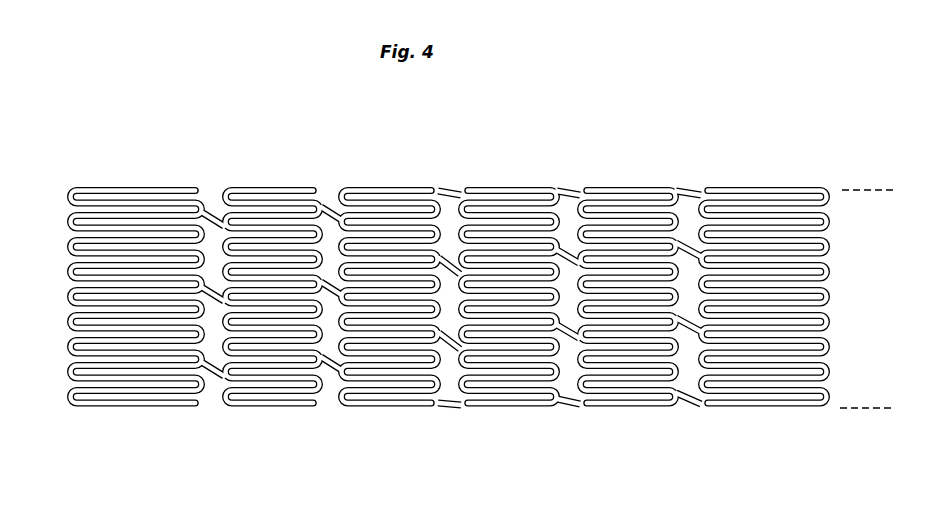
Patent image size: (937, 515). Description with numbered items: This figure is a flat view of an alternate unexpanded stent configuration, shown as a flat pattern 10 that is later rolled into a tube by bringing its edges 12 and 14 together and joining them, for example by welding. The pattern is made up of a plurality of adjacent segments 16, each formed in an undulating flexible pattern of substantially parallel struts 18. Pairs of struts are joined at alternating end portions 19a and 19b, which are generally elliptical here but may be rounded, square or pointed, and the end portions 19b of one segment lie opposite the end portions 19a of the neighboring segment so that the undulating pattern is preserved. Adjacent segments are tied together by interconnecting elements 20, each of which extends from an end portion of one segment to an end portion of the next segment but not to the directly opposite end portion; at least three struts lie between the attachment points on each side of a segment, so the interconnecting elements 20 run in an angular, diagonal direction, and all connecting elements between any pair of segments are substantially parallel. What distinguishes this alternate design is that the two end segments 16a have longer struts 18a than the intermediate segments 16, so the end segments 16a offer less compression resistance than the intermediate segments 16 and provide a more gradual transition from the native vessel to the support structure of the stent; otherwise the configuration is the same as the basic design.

The flat pattern 10 is at (459, 298).
The edge 12 is at (395, 177).
The edge 14 is at (863, 410).
The segment 16 is at (379, 176).
The end segment 16a is at (171, 175).
The strut 18 is at (163, 193).
The longer strut 18a is at (810, 206).
The interconnecting end portion 19a is at (72, 222).
The interconnecting end portion 19b is at (227, 245).
The interconnecting element 20 is at (214, 218).